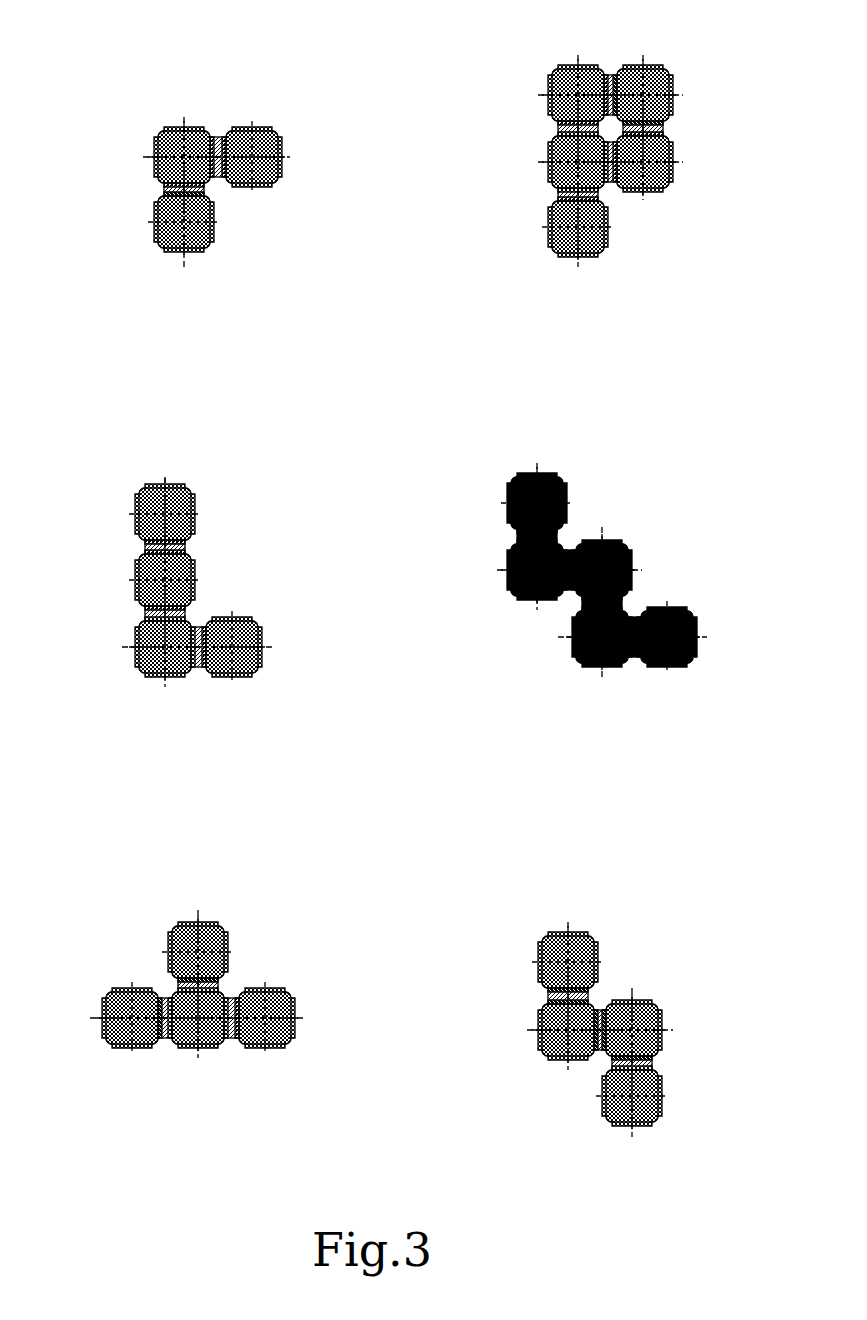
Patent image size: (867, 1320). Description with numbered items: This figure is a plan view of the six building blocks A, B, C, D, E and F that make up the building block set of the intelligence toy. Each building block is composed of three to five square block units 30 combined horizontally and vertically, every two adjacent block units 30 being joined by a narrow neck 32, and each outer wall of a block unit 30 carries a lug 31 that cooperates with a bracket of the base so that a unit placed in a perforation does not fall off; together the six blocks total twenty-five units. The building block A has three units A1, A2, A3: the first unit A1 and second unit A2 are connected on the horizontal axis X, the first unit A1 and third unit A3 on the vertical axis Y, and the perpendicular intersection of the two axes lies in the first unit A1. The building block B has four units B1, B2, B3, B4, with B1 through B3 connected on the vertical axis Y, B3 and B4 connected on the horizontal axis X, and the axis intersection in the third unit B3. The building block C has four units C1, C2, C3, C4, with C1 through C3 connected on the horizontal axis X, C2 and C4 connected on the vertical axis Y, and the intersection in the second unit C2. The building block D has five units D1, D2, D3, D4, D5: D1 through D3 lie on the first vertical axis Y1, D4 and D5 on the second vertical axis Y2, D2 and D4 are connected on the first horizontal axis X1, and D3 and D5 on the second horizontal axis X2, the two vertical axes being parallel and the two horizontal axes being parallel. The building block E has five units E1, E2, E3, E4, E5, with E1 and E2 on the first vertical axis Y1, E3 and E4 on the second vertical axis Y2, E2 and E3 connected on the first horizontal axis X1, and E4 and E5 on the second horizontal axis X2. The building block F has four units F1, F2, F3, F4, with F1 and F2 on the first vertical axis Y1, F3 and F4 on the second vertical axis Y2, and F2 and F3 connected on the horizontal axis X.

The block unit 30 is at (273, 186).
The lug 31 is at (175, 128).
The narrow neck 32 is at (220, 135).
The building block A is at (214, 153).
The first unit of building block A A1 is at (165, 133).
The second unit of building block A A2 is at (267, 137).
The third unit of building block A A3 is at (160, 247).
The building block B is at (192, 573).
The first unit of building block B B1 is at (148, 507).
The second unit of building block B B2 is at (148, 578).
The third unit of building block B B3 is at (148, 632).
The fourth unit of building block B B4 is at (237, 630).
The building block C is at (225, 969).
The first unit of building block C C1 is at (130, 1045).
The second unit of building block C C2 is at (215, 1047).
The third unit of building block C C3 is at (272, 1043).
The fourth unit of building block C C4 is at (178, 935).
The building block D is at (593, 131).
The first unit of building block D D1 is at (547, 217).
The second unit of building block D D2 is at (548, 135).
The third unit of building block D D3 is at (557, 68).
The fourth unit of building block D D4 is at (668, 135).
The fifth unit of building block D D5 is at (657, 72).
The building block E is at (595, 571).
The first unit of building block E E1 is at (505, 498).
The second unit of building block E E2 is at (507, 545).
The third unit of building block E E3 is at (625, 550).
The fourth unit of building block E E4 is at (582, 660).
The fifth unit of building block E E5 is at (697, 662).
The building block F is at (611, 1002).
The first unit of building block F F1 is at (548, 948).
The second unit of building block F F2 is at (550, 1017).
The third unit of building block F F3 is at (657, 1005).
The fourth unit of building block F F4 is at (650, 1095).
The horizontal axis X is at (368, 593).
The vertical axis Y is at (181, 587).
The first horizontal axis X1 is at (590, 366).
The second horizontal axis X2 is at (623, 366).
The first vertical axis Y1 is at (557, 551).
The second vertical axis Y2 is at (622, 585).